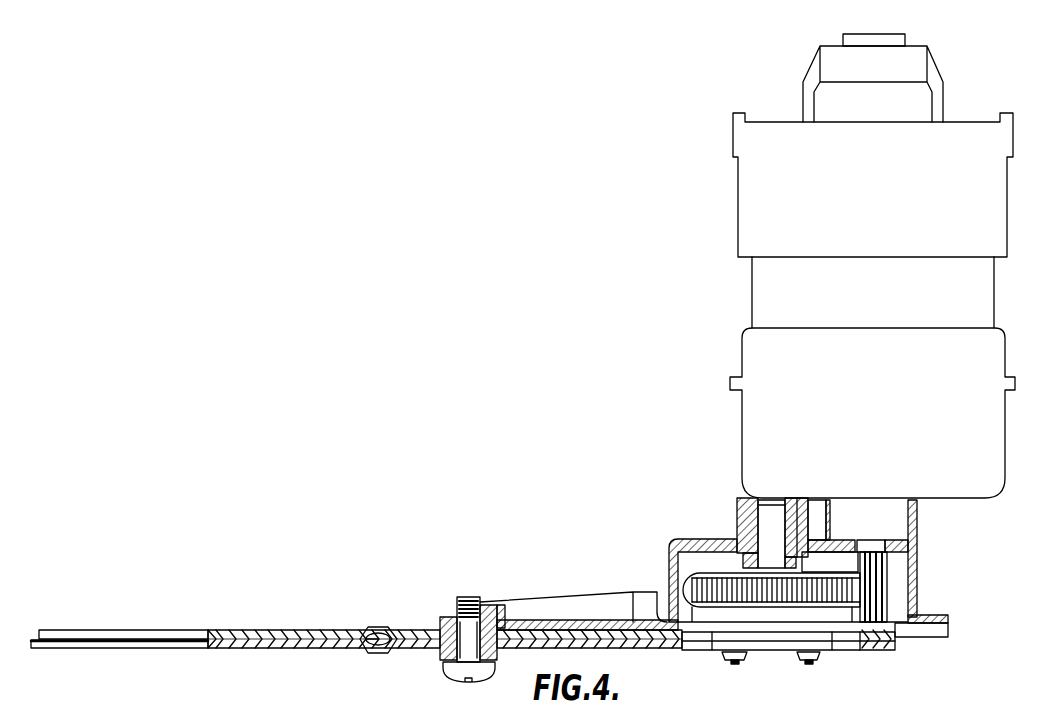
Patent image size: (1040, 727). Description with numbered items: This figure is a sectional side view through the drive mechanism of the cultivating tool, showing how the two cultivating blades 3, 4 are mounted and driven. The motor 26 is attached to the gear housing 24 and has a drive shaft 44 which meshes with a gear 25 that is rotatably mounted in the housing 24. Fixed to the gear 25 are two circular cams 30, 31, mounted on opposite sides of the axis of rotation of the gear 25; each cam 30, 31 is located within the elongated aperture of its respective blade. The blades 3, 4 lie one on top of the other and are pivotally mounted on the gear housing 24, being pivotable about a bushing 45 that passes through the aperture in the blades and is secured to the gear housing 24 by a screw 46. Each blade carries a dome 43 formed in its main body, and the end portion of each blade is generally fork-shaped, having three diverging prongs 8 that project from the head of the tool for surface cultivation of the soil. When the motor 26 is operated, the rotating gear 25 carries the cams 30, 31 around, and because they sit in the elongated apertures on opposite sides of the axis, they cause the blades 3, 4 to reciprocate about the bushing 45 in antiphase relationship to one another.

The cultivating blade 3 is at (243, 630).
The cultivating blade 4 is at (277, 646).
The prongs 8 is at (76, 630).
The gear housing 24 is at (690, 539).
The gear 25 is at (690, 590).
The motor 26 is at (977, 298).
The cam 30 is at (827, 653).
The cam 31 is at (780, 648).
The dome 43 is at (373, 653).
The drive shaft 44 is at (888, 588).
The bushing 45 is at (497, 653).
The screw 46 is at (443, 667).